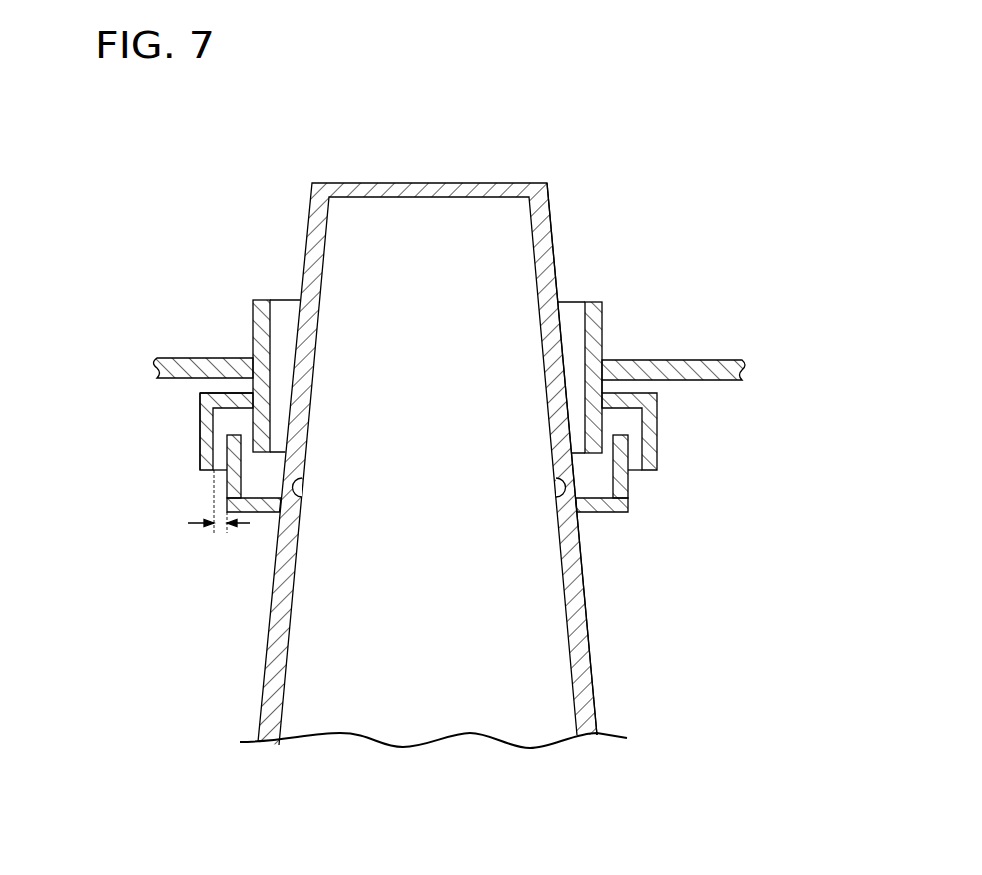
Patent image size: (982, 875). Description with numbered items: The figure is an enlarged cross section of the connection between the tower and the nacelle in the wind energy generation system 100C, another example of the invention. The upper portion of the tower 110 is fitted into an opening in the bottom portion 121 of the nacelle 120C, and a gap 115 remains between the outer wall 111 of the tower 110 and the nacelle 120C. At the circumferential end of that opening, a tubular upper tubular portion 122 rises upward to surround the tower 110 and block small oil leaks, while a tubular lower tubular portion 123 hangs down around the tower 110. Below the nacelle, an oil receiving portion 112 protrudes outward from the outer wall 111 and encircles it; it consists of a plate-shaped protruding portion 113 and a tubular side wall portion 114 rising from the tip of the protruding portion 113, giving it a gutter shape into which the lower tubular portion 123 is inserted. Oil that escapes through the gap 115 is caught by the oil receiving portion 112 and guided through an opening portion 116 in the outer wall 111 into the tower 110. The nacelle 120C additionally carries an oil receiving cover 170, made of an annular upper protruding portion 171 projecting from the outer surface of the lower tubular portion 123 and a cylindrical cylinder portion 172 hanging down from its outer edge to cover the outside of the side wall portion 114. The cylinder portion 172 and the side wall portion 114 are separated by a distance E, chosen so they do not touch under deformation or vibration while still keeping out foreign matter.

The wind energy generation system 100C is at (432, 150).
The tower 110 is at (547, 183).
The outer wall 111 is at (595, 693).
The oil receiving portion 112 is at (447, 529).
The protruding portion 113 is at (267, 517).
The side wall portion 114 is at (228, 440).
The gap 115 is at (283, 398).
The opening portion 116 is at (303, 490).
The nacelle 120C is at (717, 360).
The bottom portion 121 is at (195, 357).
The upper tubular portion 122 is at (603, 327).
The lower tubular portion 123 is at (603, 385).
The oil receiving cover 170 is at (411, 363).
The upper protruding portion 171 is at (230, 393).
The cylinder portion 172 is at (200, 428).
The distance E is at (222, 527).